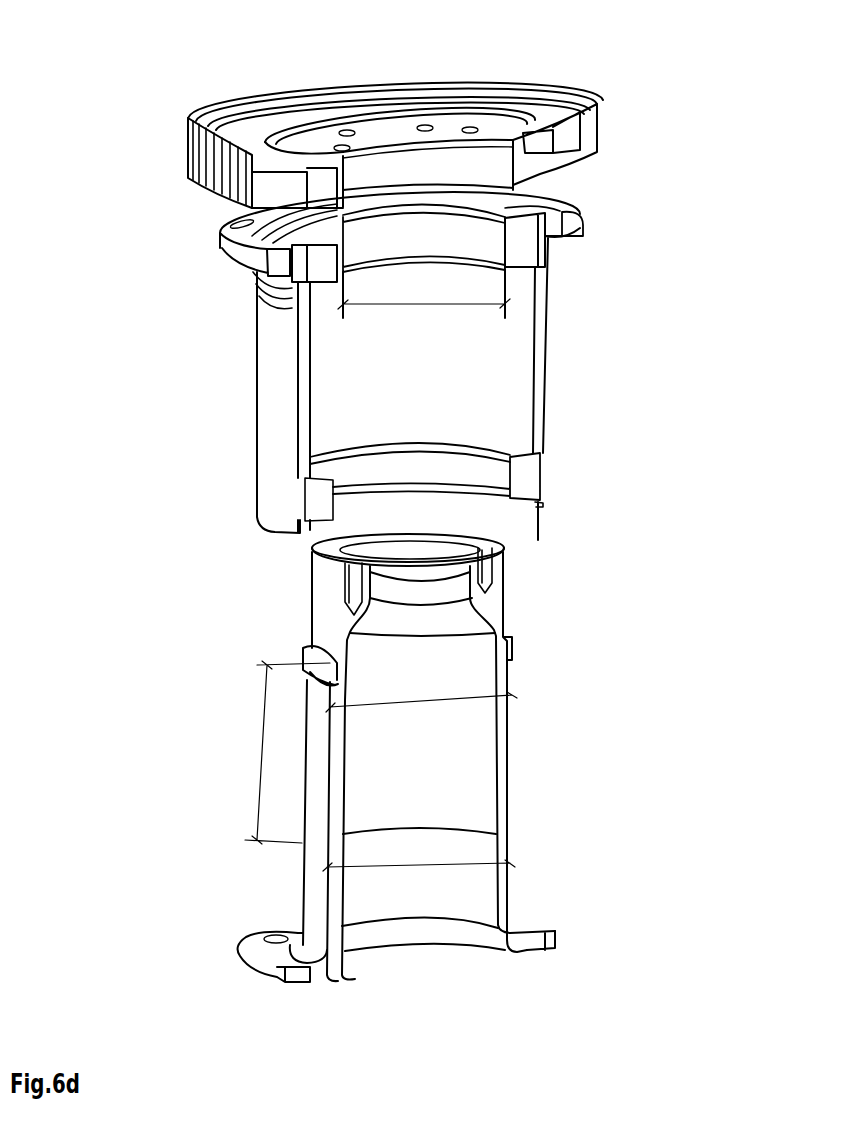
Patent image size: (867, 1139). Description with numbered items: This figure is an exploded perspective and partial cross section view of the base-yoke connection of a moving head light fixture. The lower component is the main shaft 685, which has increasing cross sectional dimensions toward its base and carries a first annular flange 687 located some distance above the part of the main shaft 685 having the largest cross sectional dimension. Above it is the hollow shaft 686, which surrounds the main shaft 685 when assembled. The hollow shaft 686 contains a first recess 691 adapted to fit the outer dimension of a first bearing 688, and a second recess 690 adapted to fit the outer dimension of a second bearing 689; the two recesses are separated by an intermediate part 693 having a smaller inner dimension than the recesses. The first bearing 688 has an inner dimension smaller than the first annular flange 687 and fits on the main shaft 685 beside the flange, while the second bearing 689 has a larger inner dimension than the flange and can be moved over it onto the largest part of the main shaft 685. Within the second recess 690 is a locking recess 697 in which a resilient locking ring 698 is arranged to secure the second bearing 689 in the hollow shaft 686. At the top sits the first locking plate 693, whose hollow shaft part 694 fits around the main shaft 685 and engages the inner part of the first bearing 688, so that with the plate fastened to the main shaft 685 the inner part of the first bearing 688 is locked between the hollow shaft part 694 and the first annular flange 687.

The main shaft 685 is at (222, 563).
The hollow shaft 686 is at (181, 272).
The first annular flange 687 is at (307, 667).
The first bearing 688 is at (523, 247).
The second bearing 689 is at (523, 477).
The second recess 690 is at (530, 453).
The first recess 691 is at (563, 213).
The first locking plate 693 is at (270, 123).
The hollow shaft part 694 is at (540, 174).
The locking recess 697 is at (545, 497).
The resilient locking ring 698 is at (538, 540).